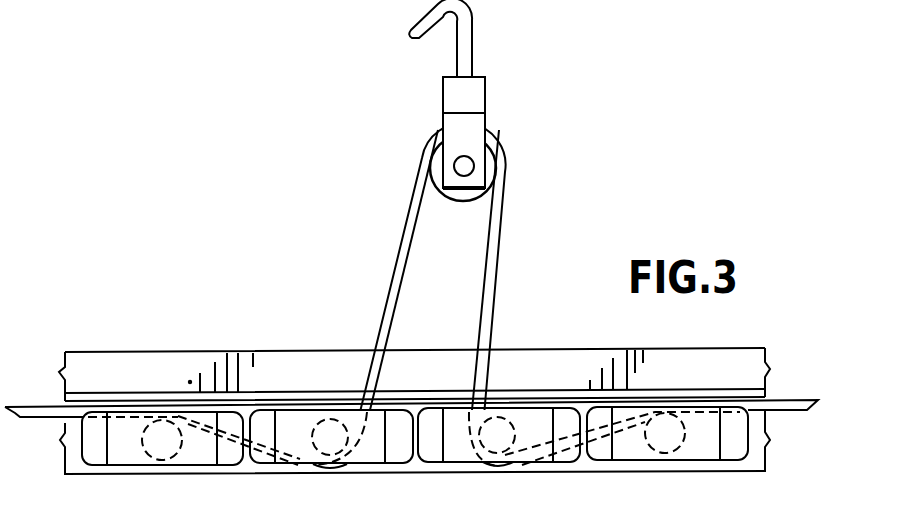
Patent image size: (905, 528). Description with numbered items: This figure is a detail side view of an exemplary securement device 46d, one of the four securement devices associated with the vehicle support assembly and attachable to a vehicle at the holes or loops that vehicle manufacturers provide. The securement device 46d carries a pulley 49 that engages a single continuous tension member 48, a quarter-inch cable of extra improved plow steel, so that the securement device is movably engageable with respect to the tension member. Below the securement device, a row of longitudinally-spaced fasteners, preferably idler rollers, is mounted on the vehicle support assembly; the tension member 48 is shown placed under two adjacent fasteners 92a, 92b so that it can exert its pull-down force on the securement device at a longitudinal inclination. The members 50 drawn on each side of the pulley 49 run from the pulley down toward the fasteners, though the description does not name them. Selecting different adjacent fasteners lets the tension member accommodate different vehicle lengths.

The securement device 46d is at (477, 50).
The tension member 48 is at (800, 398).
The pulley 49 is at (449, 195).
The straps 50 is at (407, 229).
The fastener 92a is at (312, 428).
The fastener 92b is at (513, 420).